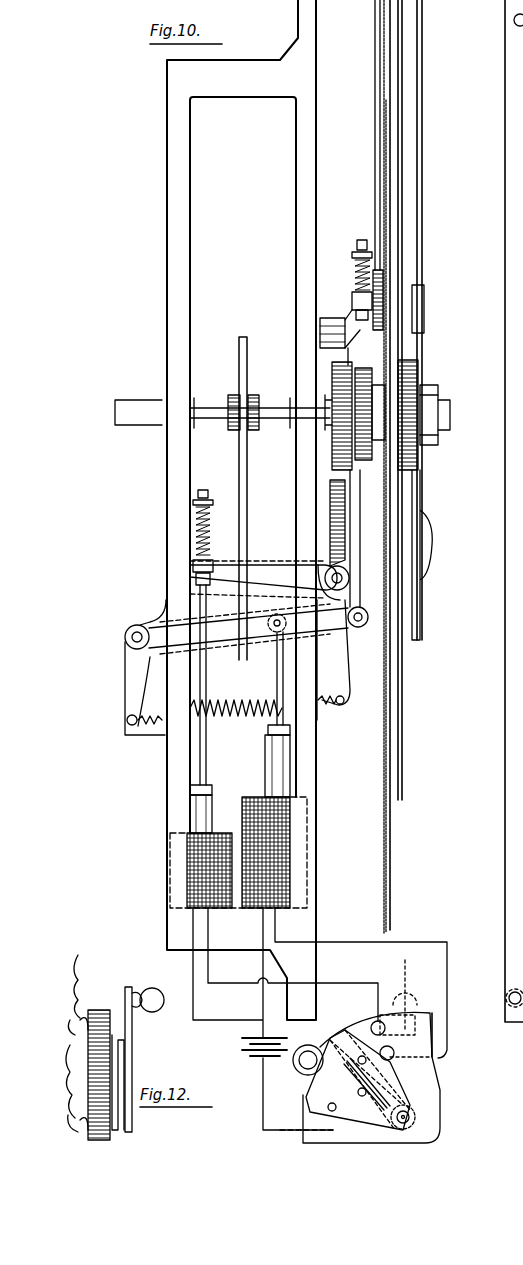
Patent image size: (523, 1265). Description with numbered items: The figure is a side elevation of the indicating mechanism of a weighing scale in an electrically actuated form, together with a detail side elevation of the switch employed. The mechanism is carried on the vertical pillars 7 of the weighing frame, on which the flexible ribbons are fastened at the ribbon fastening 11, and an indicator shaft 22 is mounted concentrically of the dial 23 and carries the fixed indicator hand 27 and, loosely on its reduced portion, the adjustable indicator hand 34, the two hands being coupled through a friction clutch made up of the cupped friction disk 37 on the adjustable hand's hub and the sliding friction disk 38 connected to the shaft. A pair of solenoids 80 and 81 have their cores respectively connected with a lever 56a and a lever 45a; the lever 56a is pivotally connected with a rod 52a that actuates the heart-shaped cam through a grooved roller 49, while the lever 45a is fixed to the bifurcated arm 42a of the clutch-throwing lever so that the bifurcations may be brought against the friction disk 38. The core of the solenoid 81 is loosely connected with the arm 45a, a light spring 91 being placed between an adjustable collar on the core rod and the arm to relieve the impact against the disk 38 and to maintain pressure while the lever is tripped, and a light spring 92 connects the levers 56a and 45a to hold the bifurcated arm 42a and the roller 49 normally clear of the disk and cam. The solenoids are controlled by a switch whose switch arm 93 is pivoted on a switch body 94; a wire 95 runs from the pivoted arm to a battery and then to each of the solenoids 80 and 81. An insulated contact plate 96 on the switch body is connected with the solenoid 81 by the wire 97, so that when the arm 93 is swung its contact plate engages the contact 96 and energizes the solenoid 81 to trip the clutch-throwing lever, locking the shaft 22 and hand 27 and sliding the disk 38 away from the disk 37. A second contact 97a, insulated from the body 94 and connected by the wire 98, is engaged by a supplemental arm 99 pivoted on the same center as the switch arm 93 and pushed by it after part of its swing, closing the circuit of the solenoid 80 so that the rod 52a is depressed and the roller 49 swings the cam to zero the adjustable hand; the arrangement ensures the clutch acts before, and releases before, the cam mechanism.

In FIG. 10, the vertical pillar 7 is at (300, 192).
In FIG. 10, the ribbon fastening 11 is at (418, 355).
In FIG. 10, the indicator shaft 22 is at (200, 405).
In FIG. 10, the dial 23 is at (387, 840).
In FIG. 10, the fixed indicator hand 27 is at (423, 228).
In FIG. 10, the adjustable indicator hand 34 is at (400, 76).
In FIG. 10, the cupped friction disk 37 is at (348, 320).
In FIG. 10, the friction disk 38 is at (335, 372).
In FIG. 10, the bifurcated arm 42a is at (335, 530).
In FIG. 10, the lever 45a is at (257, 575).
In FIG. 10, the grooved roller 49 is at (378, 270).
In FIG. 10, the rod 52a is at (362, 590).
In FIG. 10, the lever 56a is at (213, 655).
In FIG. 10, the solenoid 80 is at (258, 797).
In FIG. 10, the solenoid 81 is at (187, 863).
In FIG. 10, the light spring 91 is at (208, 535).
In FIG. 10, the light spring 92 is at (218, 716).
In FIG. 10, the switch arm 93 is at (363, 1118).
In FIG. 12, the switch arm 93 is at (133, 1056).
In FIG. 10, the switch body 94 is at (432, 1100).
In FIG. 10, the wire 95 is at (262, 1113).
In FIG. 10, the insulated contact plate 96 is at (380, 1020).
In FIG. 10, the wire 97 is at (332, 985).
In FIG. 10, the second contact 97a is at (440, 1057).
In FIG. 10, the wire 98 is at (430, 945).
In FIG. 10, the supplemental arm 99 is at (360, 1103).